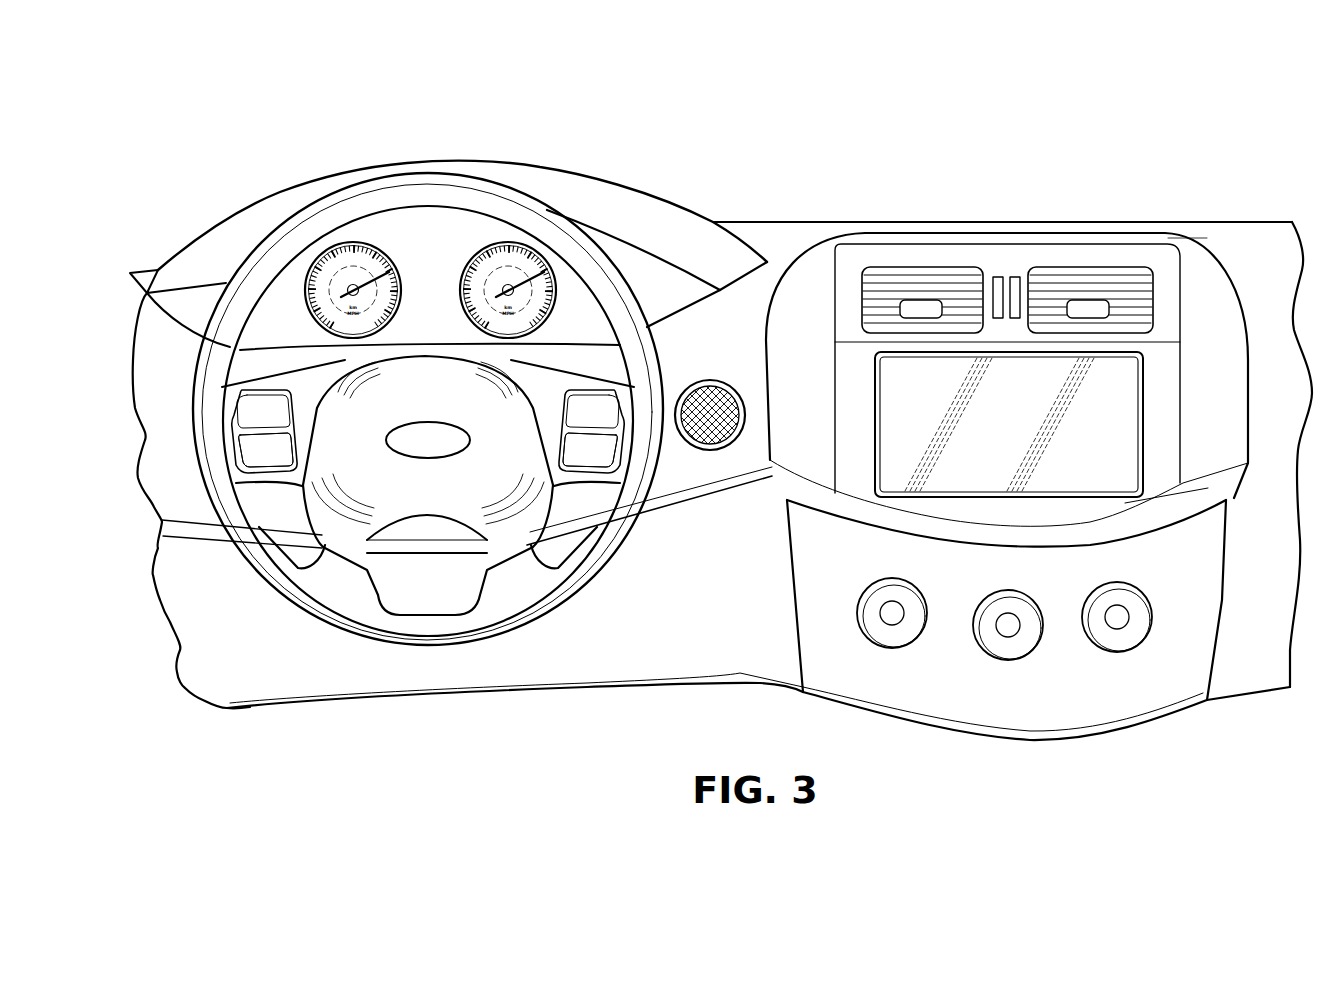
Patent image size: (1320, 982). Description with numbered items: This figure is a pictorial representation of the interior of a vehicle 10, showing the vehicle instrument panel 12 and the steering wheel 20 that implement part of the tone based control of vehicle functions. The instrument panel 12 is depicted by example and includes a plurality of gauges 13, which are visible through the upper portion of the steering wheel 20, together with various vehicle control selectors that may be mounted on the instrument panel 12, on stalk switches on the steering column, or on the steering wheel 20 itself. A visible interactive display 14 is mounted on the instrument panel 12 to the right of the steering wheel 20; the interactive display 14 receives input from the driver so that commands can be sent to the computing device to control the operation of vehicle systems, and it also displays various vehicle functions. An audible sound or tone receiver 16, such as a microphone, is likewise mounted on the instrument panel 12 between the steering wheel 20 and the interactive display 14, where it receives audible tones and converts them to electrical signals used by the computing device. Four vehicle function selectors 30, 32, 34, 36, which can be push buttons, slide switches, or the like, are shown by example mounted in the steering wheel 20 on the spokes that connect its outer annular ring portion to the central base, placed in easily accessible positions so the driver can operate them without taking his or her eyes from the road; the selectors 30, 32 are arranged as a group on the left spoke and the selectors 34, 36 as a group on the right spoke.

The vehicle 10 is at (804, 100).
The vehicle instrument panel 12 is at (861, 218).
The gauges 13 is at (335, 247).
The interactive display 14 is at (1005, 388).
The tone receiver 16 is at (727, 392).
The steering wheel 20 is at (412, 172).
The vehicle function selector 30 is at (265, 413).
The vehicle function selector 32 is at (261, 456).
The vehicle function selector 34 is at (584, 412).
The vehicle function selector 36 is at (593, 452).